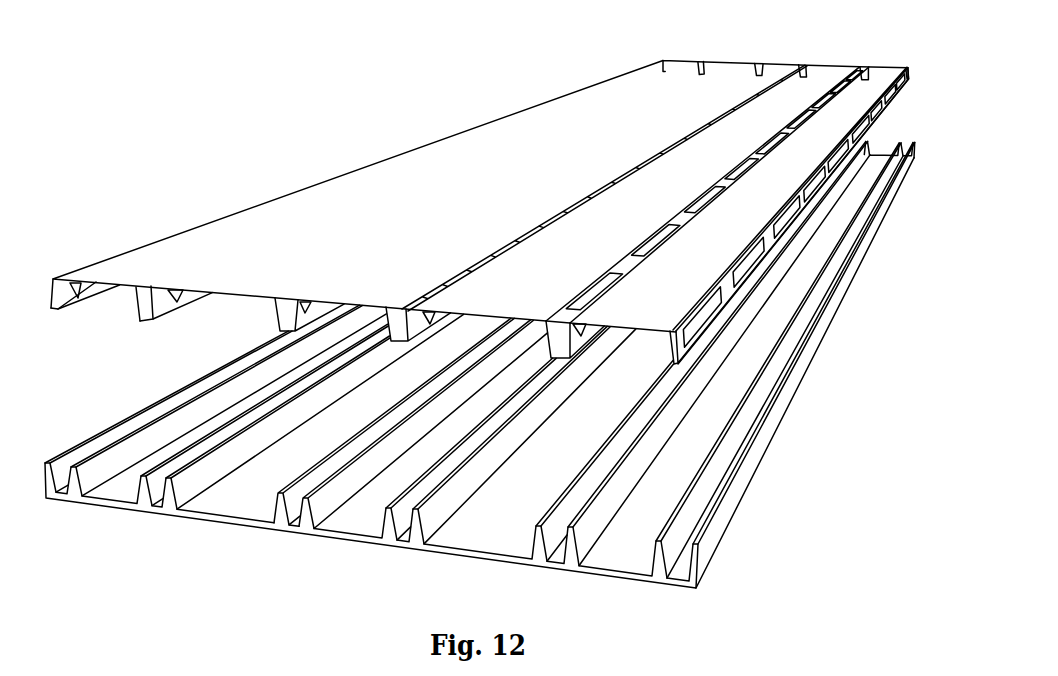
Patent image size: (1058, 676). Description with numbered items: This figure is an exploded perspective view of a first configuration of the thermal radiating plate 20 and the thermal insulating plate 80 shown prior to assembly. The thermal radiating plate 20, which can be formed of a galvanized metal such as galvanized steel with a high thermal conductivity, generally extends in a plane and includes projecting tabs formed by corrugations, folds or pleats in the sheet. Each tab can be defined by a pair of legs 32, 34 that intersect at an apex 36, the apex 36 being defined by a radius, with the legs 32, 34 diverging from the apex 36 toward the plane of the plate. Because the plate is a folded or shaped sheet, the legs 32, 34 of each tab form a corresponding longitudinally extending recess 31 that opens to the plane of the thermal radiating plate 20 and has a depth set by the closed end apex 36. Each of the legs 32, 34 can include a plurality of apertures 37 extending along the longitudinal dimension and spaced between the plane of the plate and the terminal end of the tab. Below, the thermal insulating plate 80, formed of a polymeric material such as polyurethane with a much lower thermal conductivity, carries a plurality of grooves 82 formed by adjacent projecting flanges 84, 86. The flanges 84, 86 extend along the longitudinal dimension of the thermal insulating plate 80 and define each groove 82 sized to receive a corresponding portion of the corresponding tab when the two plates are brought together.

The thermal radiating plate 20 is at (479, 195).
The recess 31 is at (147, 285).
The leg 32 is at (133, 310).
The leg 34 is at (173, 297).
The apex 36 is at (143, 318).
The apertures 37 is at (67, 305).
The thermal insulating plate 80 is at (480, 368).
The groove 82 is at (292, 518).
The projecting flange 84 is at (279, 505).
The projecting flange 86 is at (327, 506).